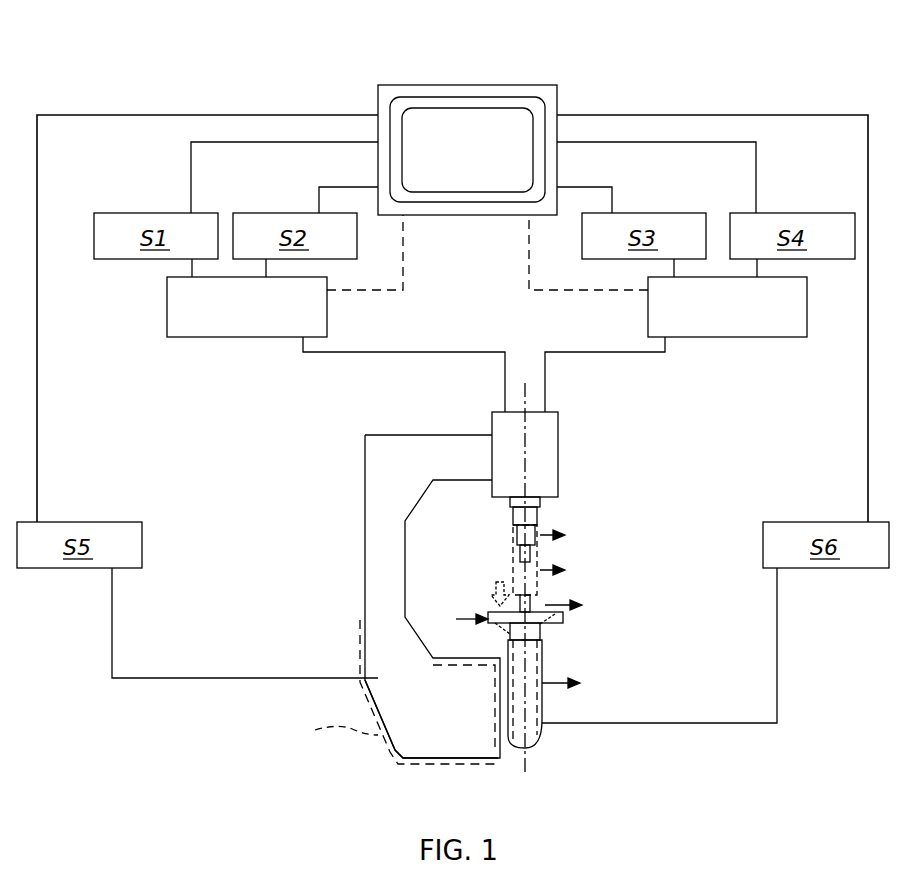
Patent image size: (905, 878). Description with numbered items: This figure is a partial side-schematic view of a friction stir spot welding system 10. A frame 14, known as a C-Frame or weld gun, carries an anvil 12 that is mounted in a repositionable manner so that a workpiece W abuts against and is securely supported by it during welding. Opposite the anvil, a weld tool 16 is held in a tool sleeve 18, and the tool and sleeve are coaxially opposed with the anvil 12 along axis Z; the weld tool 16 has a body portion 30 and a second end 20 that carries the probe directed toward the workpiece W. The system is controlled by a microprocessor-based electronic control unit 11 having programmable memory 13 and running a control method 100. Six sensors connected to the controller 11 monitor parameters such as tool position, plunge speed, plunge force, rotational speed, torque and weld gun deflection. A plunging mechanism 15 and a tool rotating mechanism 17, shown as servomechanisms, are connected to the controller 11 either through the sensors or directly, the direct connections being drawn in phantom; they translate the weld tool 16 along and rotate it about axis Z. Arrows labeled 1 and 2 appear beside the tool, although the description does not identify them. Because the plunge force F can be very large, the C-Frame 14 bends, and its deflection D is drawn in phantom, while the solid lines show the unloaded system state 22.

The FSSW system 10 is at (830, 95).
The electronic control unit 11 is at (386, 76).
The programmable memory 13 is at (503, 97).
The control method 100 is at (462, 108).
The plunging mechanism 15 is at (190, 337).
The tool rotating mechanism 17 is at (763, 337).
The tool sleeve 18 is at (532, 517).
The body portion 30 is at (521, 530).
The second end 20 is at (520, 556).
The weld tool 16 is at (510, 563).
The anvil 12 is at (536, 630).
The frame 14 is at (380, 578).
The unloaded system state 22 is at (395, 748).
The first direction arrow 1 is at (563, 553).
The second direction arrow 2 is at (572, 645).
The workpiece W is at (495, 622).
The plunge force F is at (492, 598).
The deflection D is at (334, 732).
The axis Z is at (524, 582).